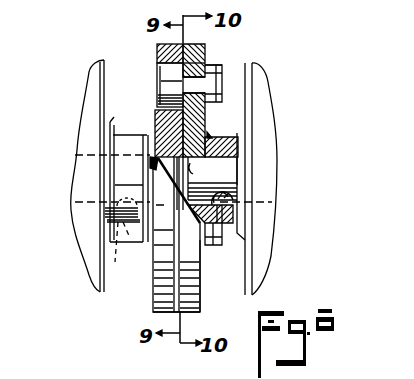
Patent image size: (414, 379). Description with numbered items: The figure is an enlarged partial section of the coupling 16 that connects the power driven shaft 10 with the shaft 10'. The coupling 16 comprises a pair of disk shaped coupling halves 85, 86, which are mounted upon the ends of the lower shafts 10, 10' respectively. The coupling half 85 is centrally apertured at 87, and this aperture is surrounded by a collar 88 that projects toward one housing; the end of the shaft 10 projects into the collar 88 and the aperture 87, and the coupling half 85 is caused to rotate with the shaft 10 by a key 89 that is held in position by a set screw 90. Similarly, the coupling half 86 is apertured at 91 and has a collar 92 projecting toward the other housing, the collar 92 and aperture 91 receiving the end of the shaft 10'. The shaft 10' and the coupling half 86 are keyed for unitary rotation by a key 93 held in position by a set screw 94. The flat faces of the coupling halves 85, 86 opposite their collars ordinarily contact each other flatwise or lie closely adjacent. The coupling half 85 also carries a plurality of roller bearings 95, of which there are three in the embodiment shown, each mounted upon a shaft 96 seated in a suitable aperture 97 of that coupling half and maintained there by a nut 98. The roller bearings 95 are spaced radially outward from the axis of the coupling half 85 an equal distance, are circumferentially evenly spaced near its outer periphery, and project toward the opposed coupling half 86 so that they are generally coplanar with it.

The shaft 10' is at (68, 176).
The power driven shaft 10 is at (268, 179).
The coupling 16 is at (155, 313).
The coupling half 85 is at (198, 265).
The coupling half 86 is at (163, 258).
The aperture 87 is at (207, 183).
The collar 88 is at (208, 137).
The key 89 is at (220, 200).
The set screw 90 is at (220, 230).
The aperture 91 is at (155, 178).
The collar 92 is at (128, 140).
The key 93 is at (115, 253).
The set screw 94 is at (135, 240).
The roller bearing 95 is at (163, 82).
The shaft 96 is at (202, 63).
The aperture 97 is at (185, 80).
The nut 98 is at (215, 65).